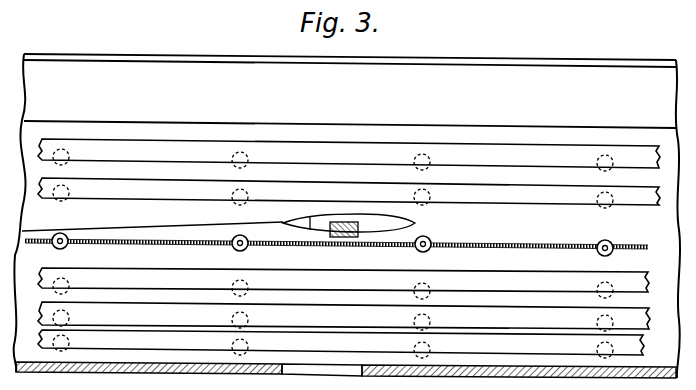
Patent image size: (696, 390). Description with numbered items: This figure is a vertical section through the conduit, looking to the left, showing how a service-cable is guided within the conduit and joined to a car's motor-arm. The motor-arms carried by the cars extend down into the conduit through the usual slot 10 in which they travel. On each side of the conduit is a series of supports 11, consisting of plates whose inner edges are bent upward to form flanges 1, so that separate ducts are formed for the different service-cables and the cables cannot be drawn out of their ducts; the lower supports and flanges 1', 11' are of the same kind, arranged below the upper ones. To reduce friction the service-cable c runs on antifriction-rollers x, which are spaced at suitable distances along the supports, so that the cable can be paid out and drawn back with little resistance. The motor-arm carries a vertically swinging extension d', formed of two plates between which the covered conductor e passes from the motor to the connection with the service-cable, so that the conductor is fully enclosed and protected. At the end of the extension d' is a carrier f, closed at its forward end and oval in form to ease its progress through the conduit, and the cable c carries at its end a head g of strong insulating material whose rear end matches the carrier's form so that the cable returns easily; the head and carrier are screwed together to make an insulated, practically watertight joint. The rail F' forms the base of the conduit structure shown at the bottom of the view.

The slot 10 is at (257, 58).
The flanges 1 is at (349, 159).
The supports 11 is at (349, 213).
The lower heddle bar 1' is at (344, 323).
The lowest heddle bar 11' is at (341, 351).
The service-cable c is at (151, 230).
The antifriction-rollers x is at (68, 163).
The head g is at (296, 223).
The covered conductor e is at (347, 226).
The carrier f is at (396, 224).
The extension of the motor-arm d' is at (336, 250).
The base rail F' is at (346, 376).